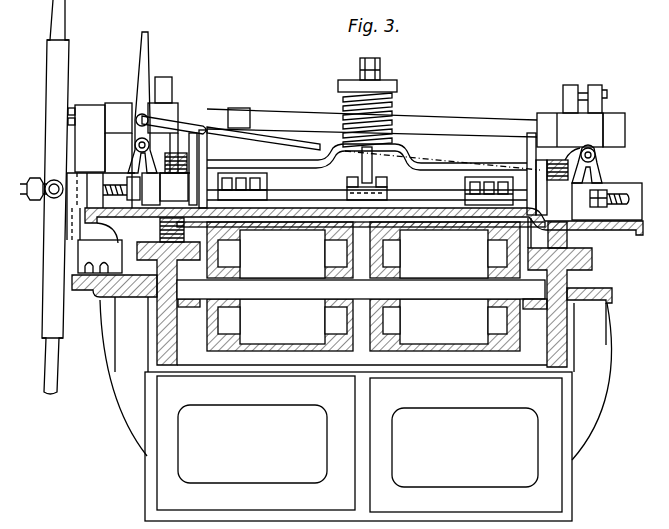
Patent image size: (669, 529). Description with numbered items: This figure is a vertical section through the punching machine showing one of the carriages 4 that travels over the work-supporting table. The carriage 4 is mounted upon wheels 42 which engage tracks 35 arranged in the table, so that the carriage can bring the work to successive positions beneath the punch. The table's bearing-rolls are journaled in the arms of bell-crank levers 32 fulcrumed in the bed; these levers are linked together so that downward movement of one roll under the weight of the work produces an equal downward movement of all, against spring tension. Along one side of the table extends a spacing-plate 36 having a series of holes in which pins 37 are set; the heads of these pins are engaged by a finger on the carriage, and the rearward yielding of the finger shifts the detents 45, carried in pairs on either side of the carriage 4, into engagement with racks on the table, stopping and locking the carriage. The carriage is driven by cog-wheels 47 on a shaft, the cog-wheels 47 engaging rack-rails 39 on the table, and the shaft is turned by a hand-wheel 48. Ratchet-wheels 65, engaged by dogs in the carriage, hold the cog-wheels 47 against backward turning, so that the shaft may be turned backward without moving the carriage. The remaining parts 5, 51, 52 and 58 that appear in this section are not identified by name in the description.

The carriage 4 is at (382, 129).
The frame 5 is at (597, 290).
The bell-crank lever 32 is at (545, 295).
The track 35 is at (568, 252).
The spacing-plate 36 is at (100, 288).
The pin 37 is at (100, 266).
The rack-rail 39 is at (165, 234).
The wheel 42 is at (205, 127).
The detent 45 is at (100, 256).
The cog-wheel 47 is at (180, 148).
The hand-wheel 48 is at (62, 60).
The field coils 51 is at (284, 230).
The casing wall 52 is at (180, 297).
The bearing 58 is at (145, 243).
The ratchet-wheel 65 is at (148, 54).